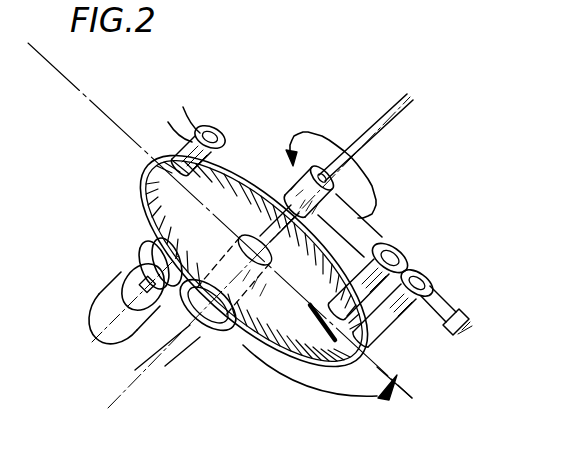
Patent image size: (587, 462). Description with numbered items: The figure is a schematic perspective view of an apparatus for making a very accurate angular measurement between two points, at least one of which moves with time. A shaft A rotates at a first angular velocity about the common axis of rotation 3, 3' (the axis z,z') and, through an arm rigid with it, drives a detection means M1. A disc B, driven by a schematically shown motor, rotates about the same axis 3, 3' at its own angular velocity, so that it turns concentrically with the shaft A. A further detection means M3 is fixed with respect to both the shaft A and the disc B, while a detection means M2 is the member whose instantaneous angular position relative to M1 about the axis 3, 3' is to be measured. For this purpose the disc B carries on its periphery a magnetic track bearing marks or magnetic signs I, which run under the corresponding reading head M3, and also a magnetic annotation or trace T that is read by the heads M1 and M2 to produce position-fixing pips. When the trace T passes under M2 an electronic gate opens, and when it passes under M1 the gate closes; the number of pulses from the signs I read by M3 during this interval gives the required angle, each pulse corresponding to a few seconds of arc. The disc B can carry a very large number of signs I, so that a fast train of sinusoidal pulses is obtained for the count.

The magnetic signs I is at (152, 190).
The shaft A is at (361, 161).
The disc B is at (256, 314).
The magnetic trace T is at (313, 318).
The detection means M1 is at (410, 251).
The detection means M2 is at (212, 127).
The detection means M3 is at (432, 290).
The axis z 3 is at (342, 163).
The axis z' 3' is at (183, 343).